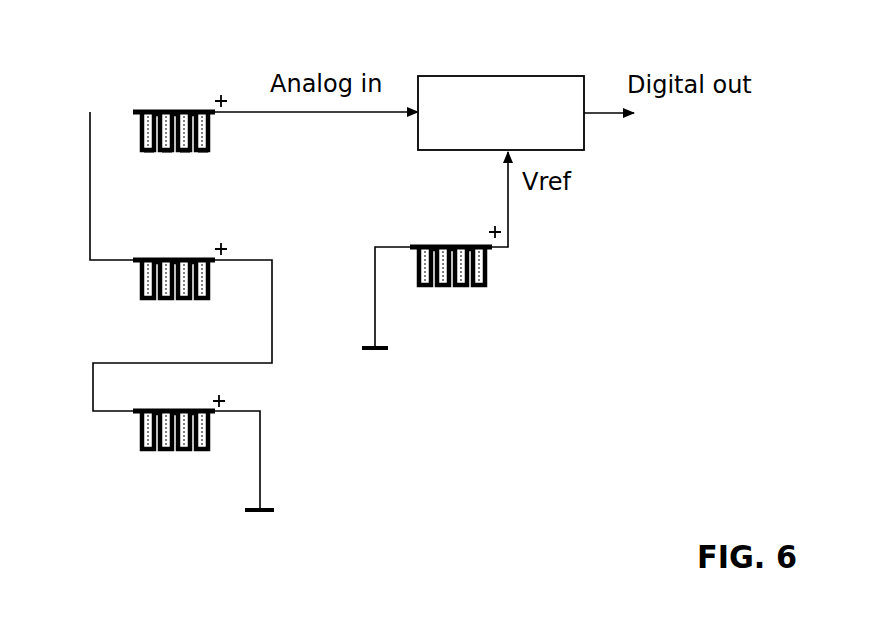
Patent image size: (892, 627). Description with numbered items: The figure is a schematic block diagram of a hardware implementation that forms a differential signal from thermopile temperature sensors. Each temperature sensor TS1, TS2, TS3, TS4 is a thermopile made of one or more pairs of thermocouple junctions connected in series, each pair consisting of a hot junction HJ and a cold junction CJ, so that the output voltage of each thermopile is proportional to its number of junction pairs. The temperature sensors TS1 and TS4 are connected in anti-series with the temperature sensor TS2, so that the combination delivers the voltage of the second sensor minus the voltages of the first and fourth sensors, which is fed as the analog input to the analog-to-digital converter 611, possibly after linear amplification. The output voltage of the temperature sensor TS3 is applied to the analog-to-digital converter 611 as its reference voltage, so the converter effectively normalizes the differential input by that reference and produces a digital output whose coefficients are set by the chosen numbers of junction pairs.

The analog-to-digital converter 611 is at (507, 81).
The hot junction HJ is at (137, 111).
The cold junction CJ is at (144, 156).
The temperature sensor TS1 is at (191, 284).
The temperature sensor TS2 is at (142, 126).
The temperature sensor TS3 is at (466, 269).
The temperature sensor TS4 is at (189, 435).